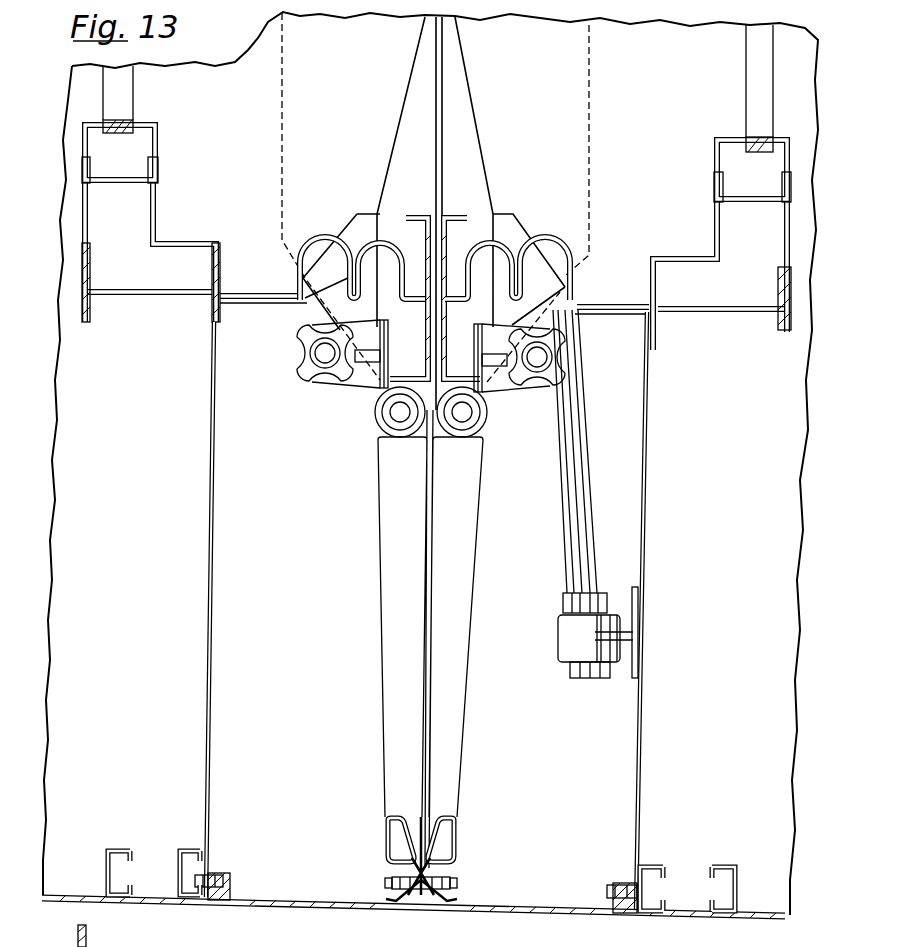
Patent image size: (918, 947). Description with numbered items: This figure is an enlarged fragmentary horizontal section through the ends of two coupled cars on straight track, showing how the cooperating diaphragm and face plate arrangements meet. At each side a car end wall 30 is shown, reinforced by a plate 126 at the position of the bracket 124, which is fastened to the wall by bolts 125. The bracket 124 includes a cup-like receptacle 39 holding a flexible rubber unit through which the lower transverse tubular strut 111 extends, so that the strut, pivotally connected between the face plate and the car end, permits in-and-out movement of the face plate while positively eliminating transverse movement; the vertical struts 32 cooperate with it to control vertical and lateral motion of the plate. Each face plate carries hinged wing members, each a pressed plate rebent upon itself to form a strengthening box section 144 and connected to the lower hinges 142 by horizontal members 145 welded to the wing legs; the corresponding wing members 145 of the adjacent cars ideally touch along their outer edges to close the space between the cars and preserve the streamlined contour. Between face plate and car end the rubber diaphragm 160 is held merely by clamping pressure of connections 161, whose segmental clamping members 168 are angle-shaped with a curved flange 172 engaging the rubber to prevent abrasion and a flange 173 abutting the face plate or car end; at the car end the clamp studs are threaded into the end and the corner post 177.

The reinforcing plate 126 is at (436, 187).
The bolt 125 is at (330, 235).
The vertical strut 32 is at (317, 383).
The lower hinge 142 is at (387, 420).
The horizontal member 145 is at (393, 685).
The box section 144 is at (458, 830).
The car end wall 30 is at (215, 528).
The lower transverse tubular strut 111 is at (574, 562).
The cup-like receptacle 39 is at (566, 648).
The bracket 124 is at (625, 677).
The diaphragm 160 is at (520, 903).
The connection 161 is at (220, 875).
The corner post 177 is at (648, 866).
The flange 173 is at (110, 936).
The segmental clamping member 168 is at (206, 941).
The curved flange 172 is at (681, 942).